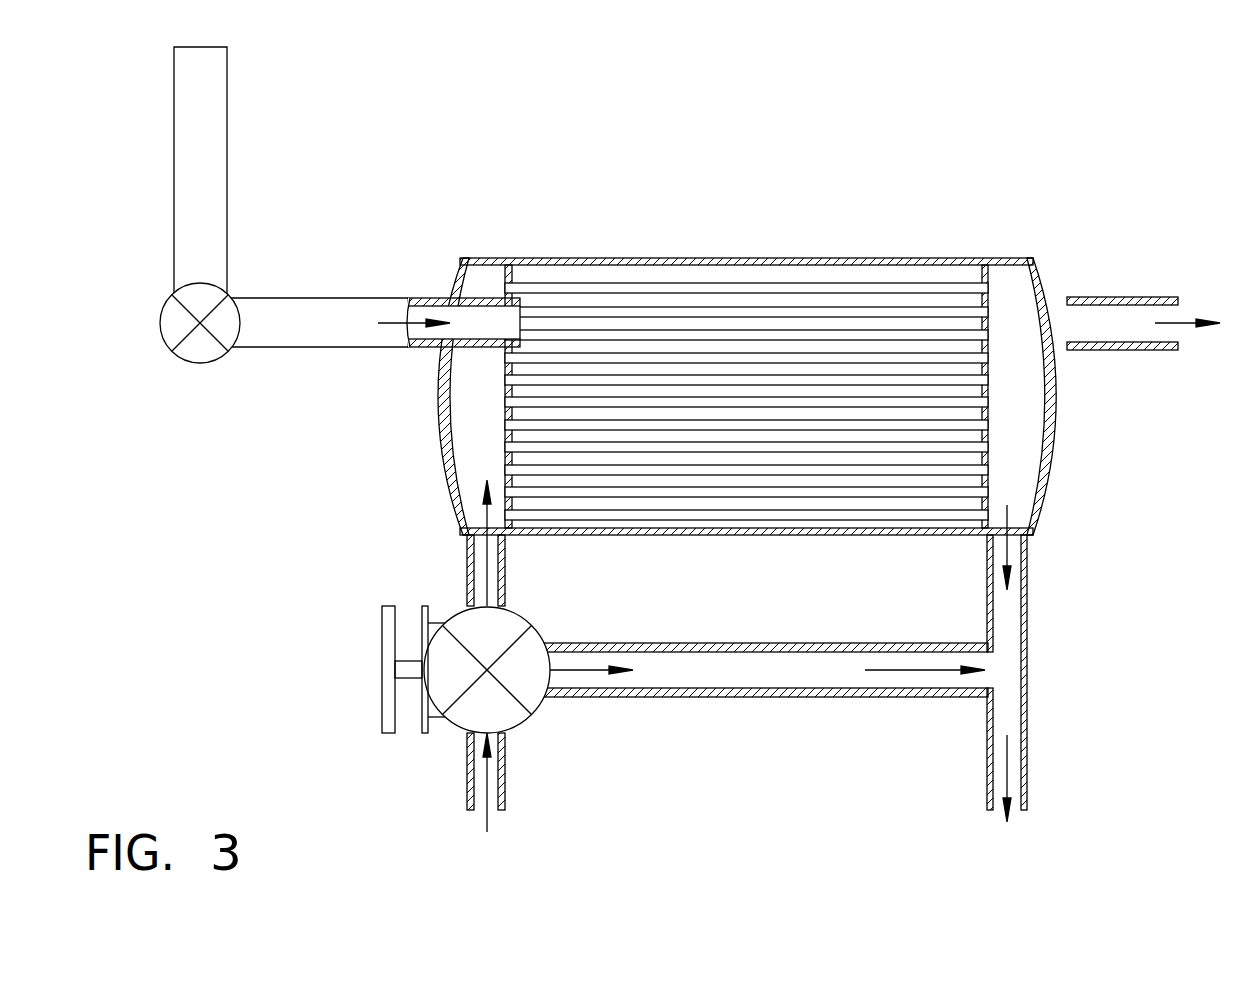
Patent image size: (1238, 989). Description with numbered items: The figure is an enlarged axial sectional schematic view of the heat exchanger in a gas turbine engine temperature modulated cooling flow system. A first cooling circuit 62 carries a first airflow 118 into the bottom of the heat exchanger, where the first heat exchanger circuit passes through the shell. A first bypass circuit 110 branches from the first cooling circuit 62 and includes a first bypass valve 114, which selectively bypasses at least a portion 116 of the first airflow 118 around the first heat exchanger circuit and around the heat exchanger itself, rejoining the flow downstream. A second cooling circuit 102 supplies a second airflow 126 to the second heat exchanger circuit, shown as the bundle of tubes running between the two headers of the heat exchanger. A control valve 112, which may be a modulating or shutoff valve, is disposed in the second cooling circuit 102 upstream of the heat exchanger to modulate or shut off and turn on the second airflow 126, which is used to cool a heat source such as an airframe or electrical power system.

The second cooling circuit 102 is at (228, 148).
The control valve 112 is at (202, 363).
The second airflow 126 is at (393, 312).
The first bypass circuit 110 is at (692, 513).
The portion of first airflow 116 is at (897, 672).
The first bypass valve 114 is at (525, 722).
The first cooling circuit 62 is at (505, 773).
The first airflow 118 is at (487, 822).